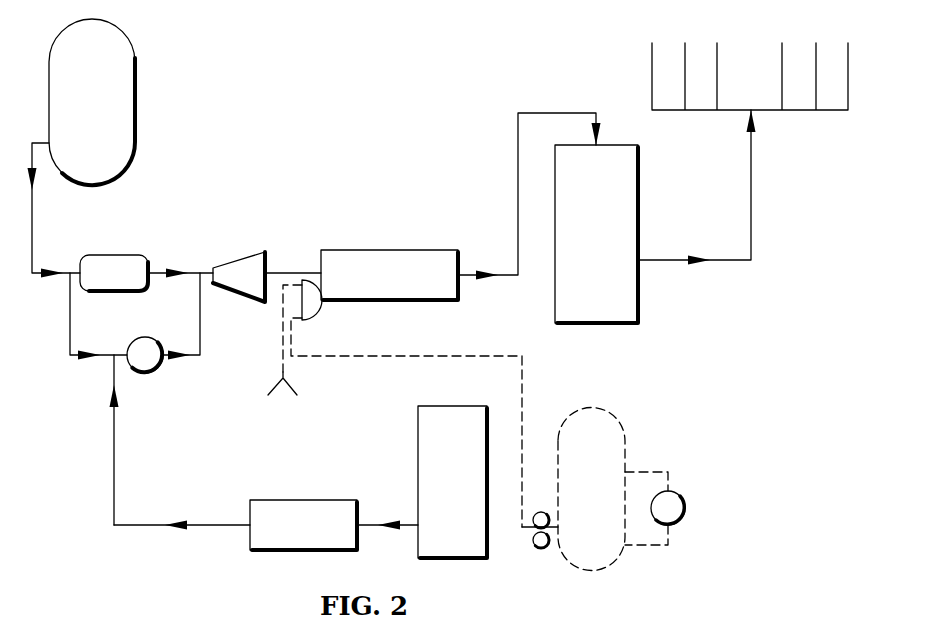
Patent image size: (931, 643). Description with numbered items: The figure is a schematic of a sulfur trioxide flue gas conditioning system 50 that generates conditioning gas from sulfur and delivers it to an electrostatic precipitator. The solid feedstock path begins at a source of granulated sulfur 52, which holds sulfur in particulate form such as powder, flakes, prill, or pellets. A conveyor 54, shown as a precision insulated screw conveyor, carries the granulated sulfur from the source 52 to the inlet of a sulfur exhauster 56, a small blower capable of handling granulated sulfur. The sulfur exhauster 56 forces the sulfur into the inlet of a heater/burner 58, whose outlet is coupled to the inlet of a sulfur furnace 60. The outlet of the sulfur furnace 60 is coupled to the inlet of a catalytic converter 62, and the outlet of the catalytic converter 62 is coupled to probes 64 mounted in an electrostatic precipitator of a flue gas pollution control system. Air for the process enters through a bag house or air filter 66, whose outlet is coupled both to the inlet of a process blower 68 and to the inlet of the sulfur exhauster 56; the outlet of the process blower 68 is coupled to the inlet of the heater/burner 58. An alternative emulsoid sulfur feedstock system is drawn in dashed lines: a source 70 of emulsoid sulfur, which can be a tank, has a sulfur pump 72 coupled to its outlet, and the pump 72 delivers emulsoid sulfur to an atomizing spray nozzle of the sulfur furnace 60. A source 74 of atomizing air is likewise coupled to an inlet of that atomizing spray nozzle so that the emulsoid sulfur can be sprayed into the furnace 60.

The SO3 flue gas conditioning system 50 is at (700, 332).
The source of granulated sulfur 52 is at (438, 406).
The conveyor 54 is at (313, 499).
The sulfur exhauster 56 is at (143, 373).
The heater/burner 58 is at (248, 298).
The sulfur furnace 60 is at (402, 250).
The catalytic converter 62 is at (640, 238).
The probes 64 is at (790, 110).
The bag house or air filter 66 is at (135, 126).
The process blower 68 is at (130, 292).
The source of emulsoid sulfur 70 is at (600, 407).
The sulfur pump 72 is at (541, 548).
The source of atomizing air 74 is at (281, 404).